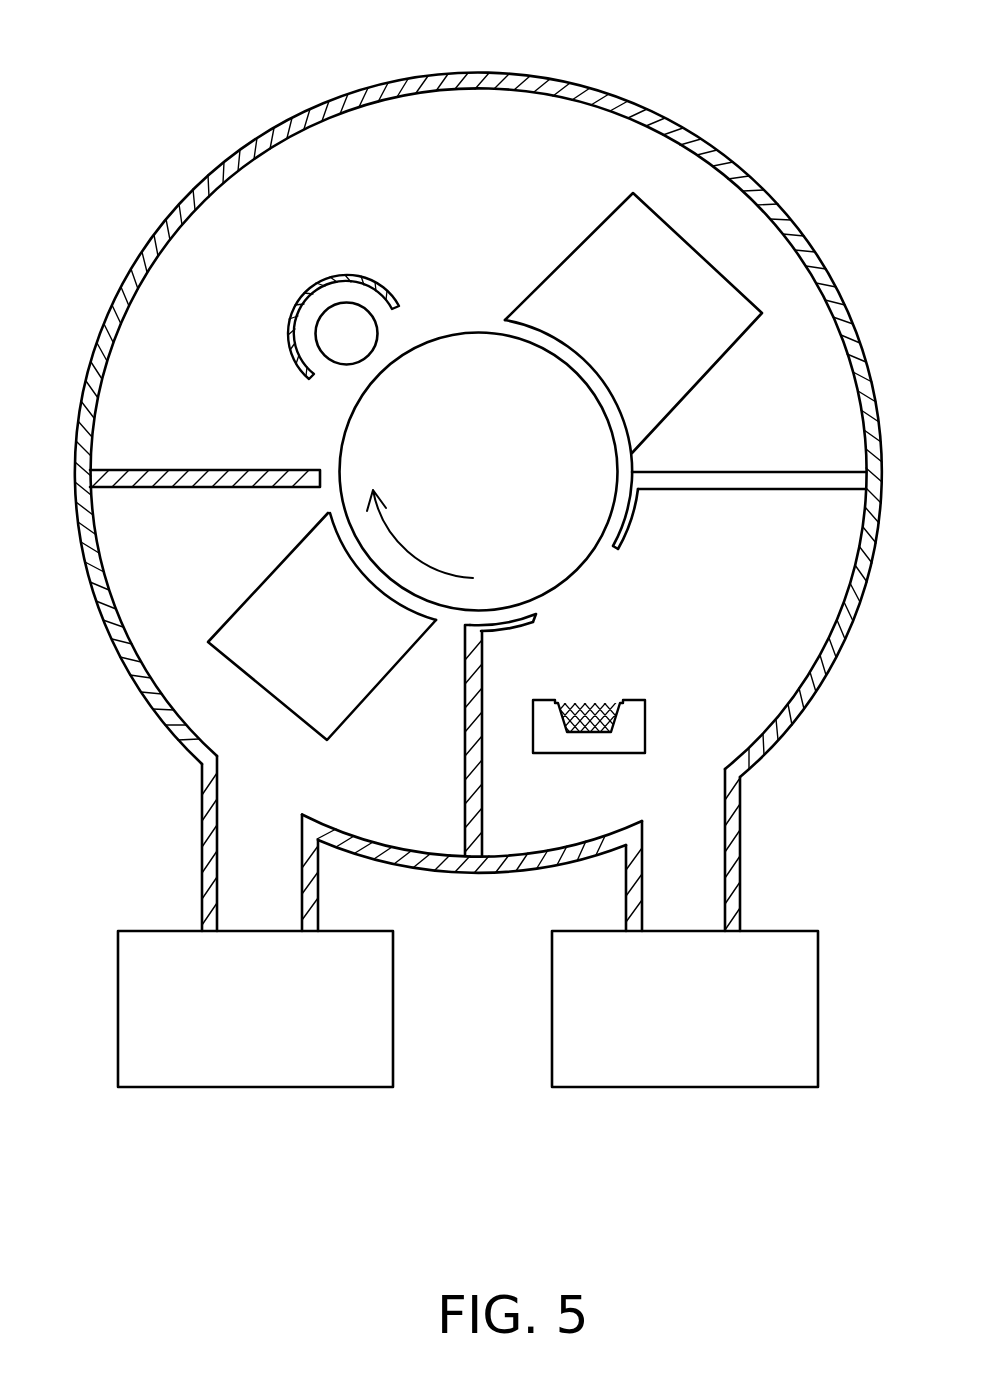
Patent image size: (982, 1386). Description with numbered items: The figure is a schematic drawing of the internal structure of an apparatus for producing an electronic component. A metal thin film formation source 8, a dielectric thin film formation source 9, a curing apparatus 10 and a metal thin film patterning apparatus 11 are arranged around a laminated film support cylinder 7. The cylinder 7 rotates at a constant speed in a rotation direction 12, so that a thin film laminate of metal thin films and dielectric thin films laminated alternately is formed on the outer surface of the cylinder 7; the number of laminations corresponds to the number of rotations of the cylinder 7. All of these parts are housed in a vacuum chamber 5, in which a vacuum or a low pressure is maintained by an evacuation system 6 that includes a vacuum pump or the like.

The vacuum chamber 5 is at (625, 98).
The evacuation system 6 is at (608, 1072).
The laminated film support cylinder 7 is at (552, 563).
The metal thin film formation source 8 is at (630, 730).
The dielectric thin film formation source 9 is at (270, 635).
The curing apparatus 10 is at (325, 387).
The metal thin film patterning apparatus 11 is at (668, 365).
The rotation direction 12 is at (440, 570).